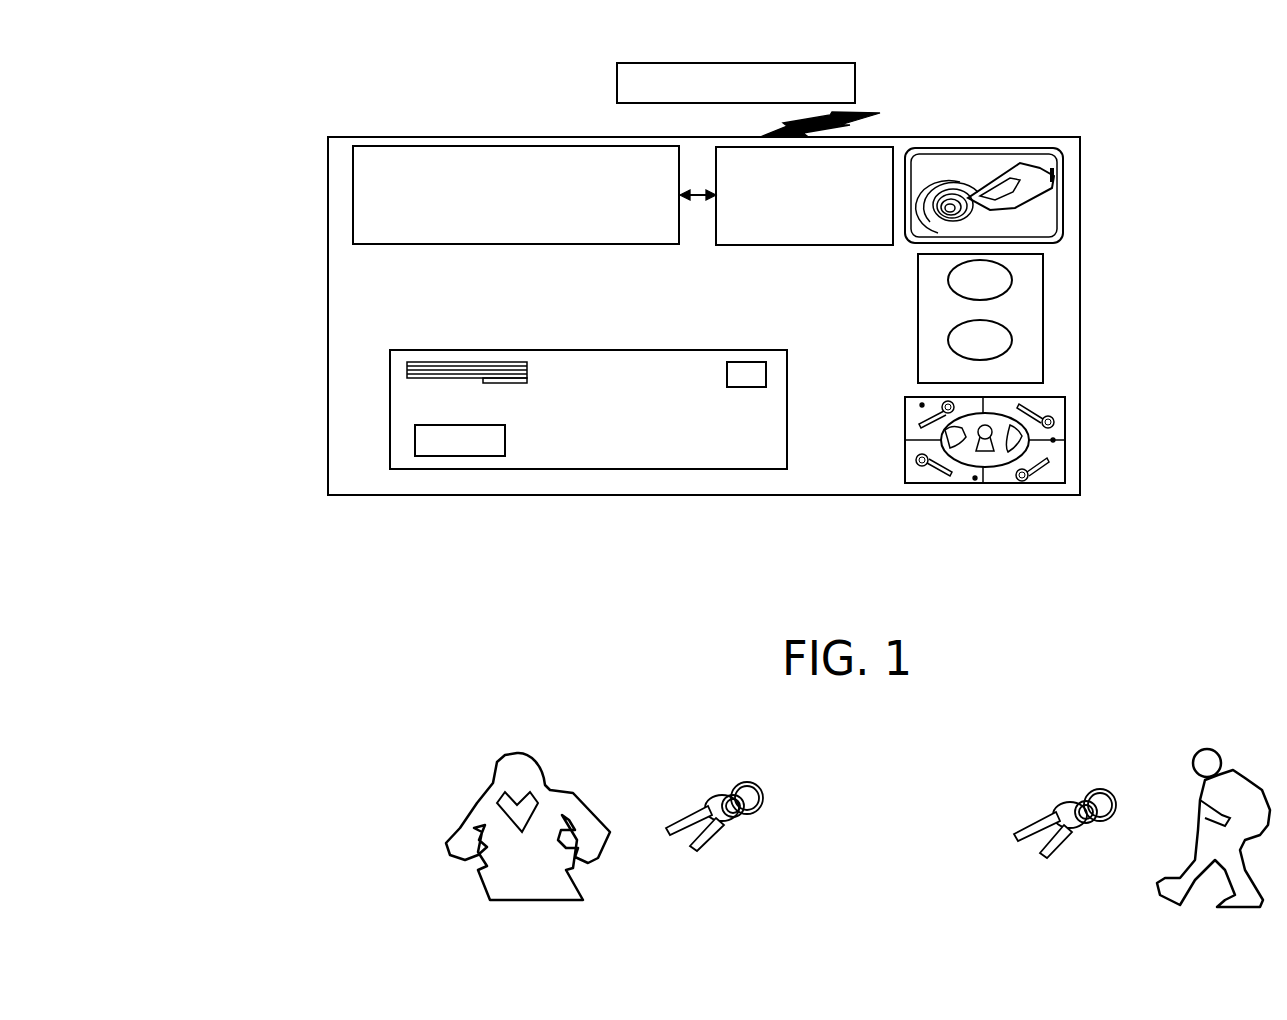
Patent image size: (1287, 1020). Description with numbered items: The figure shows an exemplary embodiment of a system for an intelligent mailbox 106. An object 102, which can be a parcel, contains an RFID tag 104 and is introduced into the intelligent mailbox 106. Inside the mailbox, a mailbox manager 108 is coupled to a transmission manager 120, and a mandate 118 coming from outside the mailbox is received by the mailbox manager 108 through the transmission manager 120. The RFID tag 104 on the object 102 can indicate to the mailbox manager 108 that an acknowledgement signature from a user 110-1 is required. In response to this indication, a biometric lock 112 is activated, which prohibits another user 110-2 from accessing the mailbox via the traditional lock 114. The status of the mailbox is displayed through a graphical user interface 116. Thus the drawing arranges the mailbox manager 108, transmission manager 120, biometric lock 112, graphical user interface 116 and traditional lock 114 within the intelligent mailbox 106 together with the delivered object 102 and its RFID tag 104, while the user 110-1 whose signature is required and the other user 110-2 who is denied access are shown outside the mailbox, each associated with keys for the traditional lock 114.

The object 102 is at (645, 470).
The RFID tag 104 is at (417, 441).
The intelligent mailbox 106 is at (328, 315).
The mailbox manager 108 is at (353, 143).
The user 110-1 is at (553, 790).
The another user 110-2 is at (1197, 753).
The biometric lock 112 is at (1060, 182).
The traditional lock 114 is at (1058, 473).
The graphical user interface 116 is at (1043, 317).
The mandate 118 is at (617, 82).
The transmission manager 120 is at (780, 245).